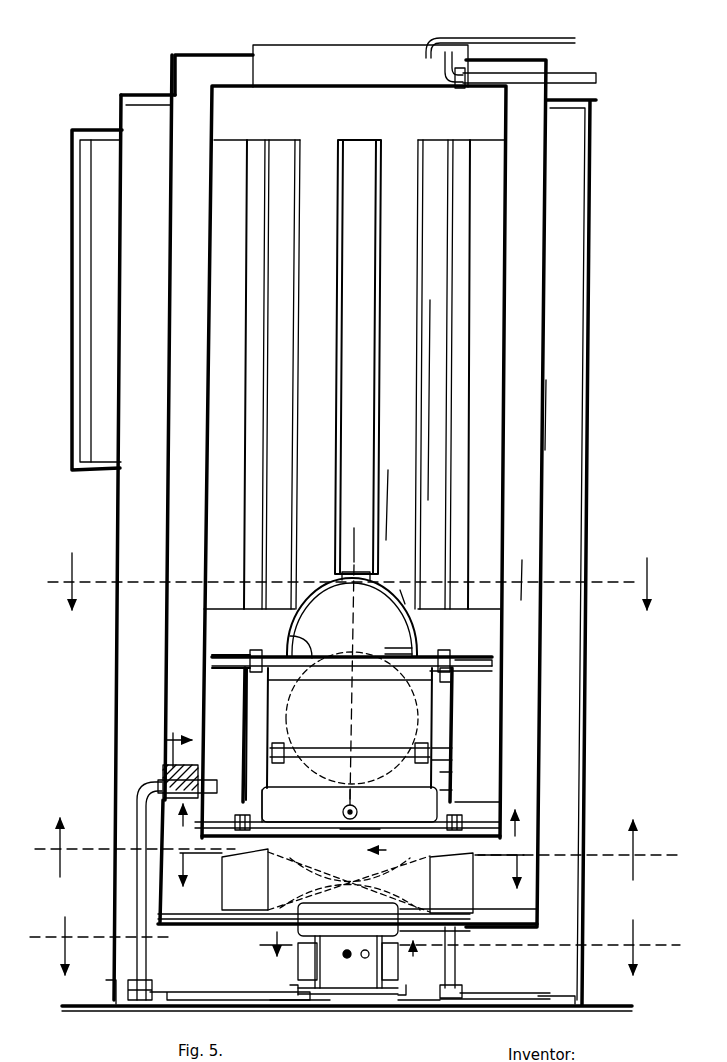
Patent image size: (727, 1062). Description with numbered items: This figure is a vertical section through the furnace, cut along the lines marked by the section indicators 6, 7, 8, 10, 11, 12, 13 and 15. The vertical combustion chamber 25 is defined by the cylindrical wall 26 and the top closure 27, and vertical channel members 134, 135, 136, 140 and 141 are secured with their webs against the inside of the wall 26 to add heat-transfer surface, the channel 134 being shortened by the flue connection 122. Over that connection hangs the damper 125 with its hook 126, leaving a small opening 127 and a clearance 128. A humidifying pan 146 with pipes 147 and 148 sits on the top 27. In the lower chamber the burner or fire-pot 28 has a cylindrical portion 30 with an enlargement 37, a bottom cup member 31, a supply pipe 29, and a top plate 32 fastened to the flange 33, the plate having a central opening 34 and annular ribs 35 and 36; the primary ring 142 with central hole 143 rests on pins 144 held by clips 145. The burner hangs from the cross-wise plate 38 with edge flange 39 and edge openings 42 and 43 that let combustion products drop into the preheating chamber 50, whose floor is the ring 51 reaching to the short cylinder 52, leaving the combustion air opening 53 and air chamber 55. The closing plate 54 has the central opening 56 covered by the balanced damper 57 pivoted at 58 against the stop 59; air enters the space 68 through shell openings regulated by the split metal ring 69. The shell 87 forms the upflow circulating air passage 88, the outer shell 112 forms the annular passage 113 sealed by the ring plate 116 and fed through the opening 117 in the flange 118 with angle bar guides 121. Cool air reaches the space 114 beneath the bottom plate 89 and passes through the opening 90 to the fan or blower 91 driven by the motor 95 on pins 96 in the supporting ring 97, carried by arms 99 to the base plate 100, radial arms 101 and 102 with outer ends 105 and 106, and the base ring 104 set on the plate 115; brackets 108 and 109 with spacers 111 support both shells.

The flange or neck 118 is at (100, 372).
The ring plate 116 is at (152, 92).
The angle bar guides 121 is at (74, 148).
The opening 117 is at (120, 420).
The top closure 27 is at (228, 80).
The humidifying pan 146 is at (312, 58).
The pipe 148 is at (575, 41).
The pipe 147 is at (600, 78).
The cylindrical wall 26 is at (508, 352).
The annular passage 113 is at (575, 270).
The outer shell 112 is at (591, 298).
The cylindrical shell 87 is at (550, 415).
The vertical channel member 134 is at (330, 446).
The vertical channel member 140 is at (343, 374).
The vertical channel member 141 is at (292, 499).
The vertical channel member 135 is at (410, 436).
The vertical channel member 136 is at (466, 400).
The vertical combustion chamber 25 is at (390, 466).
The upflow circulating air passage 88 is at (522, 553).
The section line 7 is at (351, 581).
The section line 6 is at (372, 694).
The damper 125 is at (333, 682).
The flue connection or opening 122 is at (322, 588).
The hook 126 is at (366, 578).
The clearance 128 is at (404, 598).
The central opening 34 is at (310, 648).
The annular rib 35 is at (408, 648).
The annular rib 36 is at (408, 655).
The edge opening 43 is at (480, 660).
The edge opening 42 is at (224, 656).
The top plate 32 is at (441, 650).
The cross-wise extending plate 38 is at (463, 656).
The edge flange 39 is at (500, 670).
The flange 33 is at (456, 680).
The enlargement 37 is at (265, 680).
The burner or fire-pot 28 is at (442, 710).
The cylindrical portion 30 is at (436, 732).
The small opening 127 is at (320, 682).
The primary ring 142 is at (415, 750).
The central hole 143 is at (310, 748).
The clips 145 is at (280, 745).
The pins 144 is at (280, 758).
The preheating chamber 50 is at (442, 748).
The short cylinder 52 is at (452, 770).
The air chamber 55 is at (455, 772).
The combustion air opening 53 is at (456, 790).
The ring 51 is at (480, 800).
The split metal ring 69 is at (512, 792).
The bottom cup member 31 is at (349, 804).
The stop 59 is at (270, 822).
The pivot 58 is at (343, 812).
The supply pipe 29 is at (358, 812).
The central opening 56 is at (375, 830).
The balanced damper 57 is at (303, 838).
The closing plate 54 is at (452, 846).
The section line 8 is at (350, 824).
The section line 15 is at (352, 872).
The section line 13 is at (179, 741).
The section line 12 is at (351, 849).
The section line 11 is at (355, 946).
The section line 10 is at (346, 949).
The fan or blower 91 is at (240, 892).
The space 68 is at (468, 866).
The bottom plate 89 is at (508, 920).
The central opening 90 is at (466, 933).
The driving motor 95 is at (348, 945).
The pins 96 is at (300, 960).
The supporting ring 97 is at (337, 968).
The arms 99 is at (404, 988).
The radial arm 101 is at (206, 988).
The base plate 100 is at (340, 1012).
The plate 115 is at (292, 1008).
The radial arm 102 is at (408, 1003).
The surrounding ring 104 is at (118, 1008).
The outer end 105 is at (152, 985).
The conduit 108 is at (138, 878).
The spacer 111 is at (163, 768).
The bracket 109 is at (457, 963).
The outer end 106 is at (466, 1000).
The space 114 is at (530, 982).